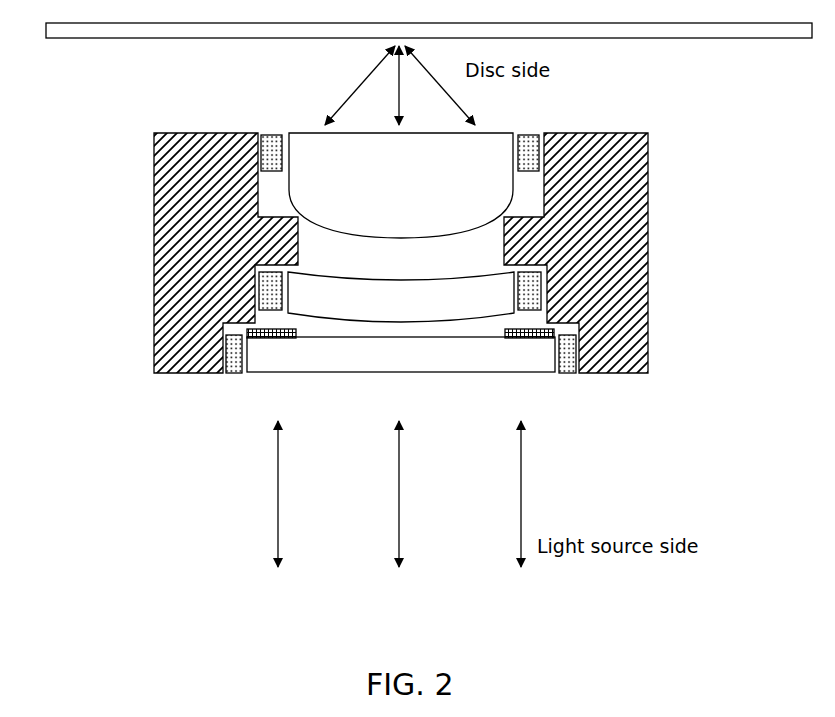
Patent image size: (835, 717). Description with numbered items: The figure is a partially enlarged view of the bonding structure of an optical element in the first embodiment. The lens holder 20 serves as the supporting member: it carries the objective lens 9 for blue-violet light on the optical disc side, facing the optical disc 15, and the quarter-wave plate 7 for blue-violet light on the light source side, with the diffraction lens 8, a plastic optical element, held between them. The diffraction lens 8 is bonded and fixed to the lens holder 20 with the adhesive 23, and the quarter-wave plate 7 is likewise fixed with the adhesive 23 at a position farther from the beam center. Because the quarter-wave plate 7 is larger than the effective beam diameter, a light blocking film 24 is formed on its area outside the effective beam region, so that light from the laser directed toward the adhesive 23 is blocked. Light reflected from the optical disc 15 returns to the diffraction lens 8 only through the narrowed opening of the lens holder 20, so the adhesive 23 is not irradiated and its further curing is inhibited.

The λ/4 plate for blue-violet light 7 is at (425, 352).
The diffraction lens 8 is at (453, 292).
The objective lens for blue-violet light 9 is at (382, 157).
The optical disc 15 is at (687, 31).
The lens holder 20 is at (215, 263).
The adhesive 23 is at (267, 142).
The light blocking film 24 is at (528, 338).